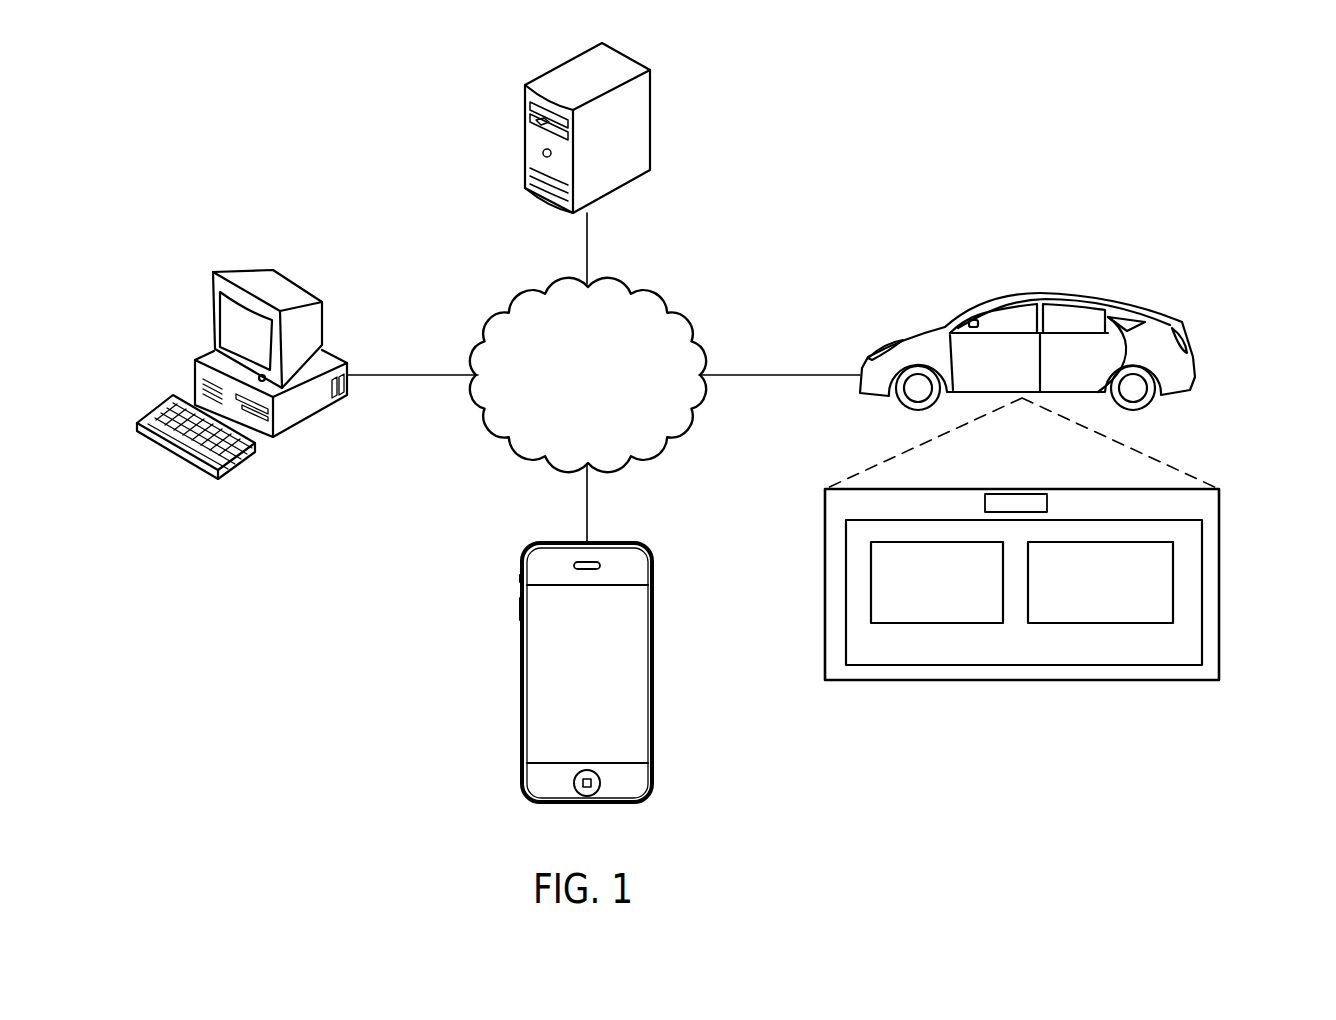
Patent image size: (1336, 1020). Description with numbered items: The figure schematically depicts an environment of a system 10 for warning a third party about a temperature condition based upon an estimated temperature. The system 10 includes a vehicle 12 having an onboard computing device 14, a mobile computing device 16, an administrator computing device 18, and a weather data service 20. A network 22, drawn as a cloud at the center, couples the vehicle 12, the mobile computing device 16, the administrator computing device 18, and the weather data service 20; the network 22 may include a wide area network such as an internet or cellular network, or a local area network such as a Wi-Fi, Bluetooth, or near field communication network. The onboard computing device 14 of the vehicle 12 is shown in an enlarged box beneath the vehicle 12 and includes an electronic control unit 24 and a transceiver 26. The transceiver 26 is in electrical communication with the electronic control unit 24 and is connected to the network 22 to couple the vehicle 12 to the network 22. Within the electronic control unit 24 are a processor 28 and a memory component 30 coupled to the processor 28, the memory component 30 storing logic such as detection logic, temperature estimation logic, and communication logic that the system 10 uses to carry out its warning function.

The system 10 is at (855, 176).
The vehicle 12 is at (1163, 291).
The onboard computing device 14 is at (1220, 513).
The mobile computing device 16 is at (653, 655).
The administrator computing device 18 is at (322, 310).
The weather data service 20 is at (650, 117).
The network 22 is at (703, 339).
The electronic control unit 24 is at (1203, 575).
The transceiver 26 is at (1015, 493).
The processor 28 is at (915, 623).
The memory component 30 is at (1092, 623).